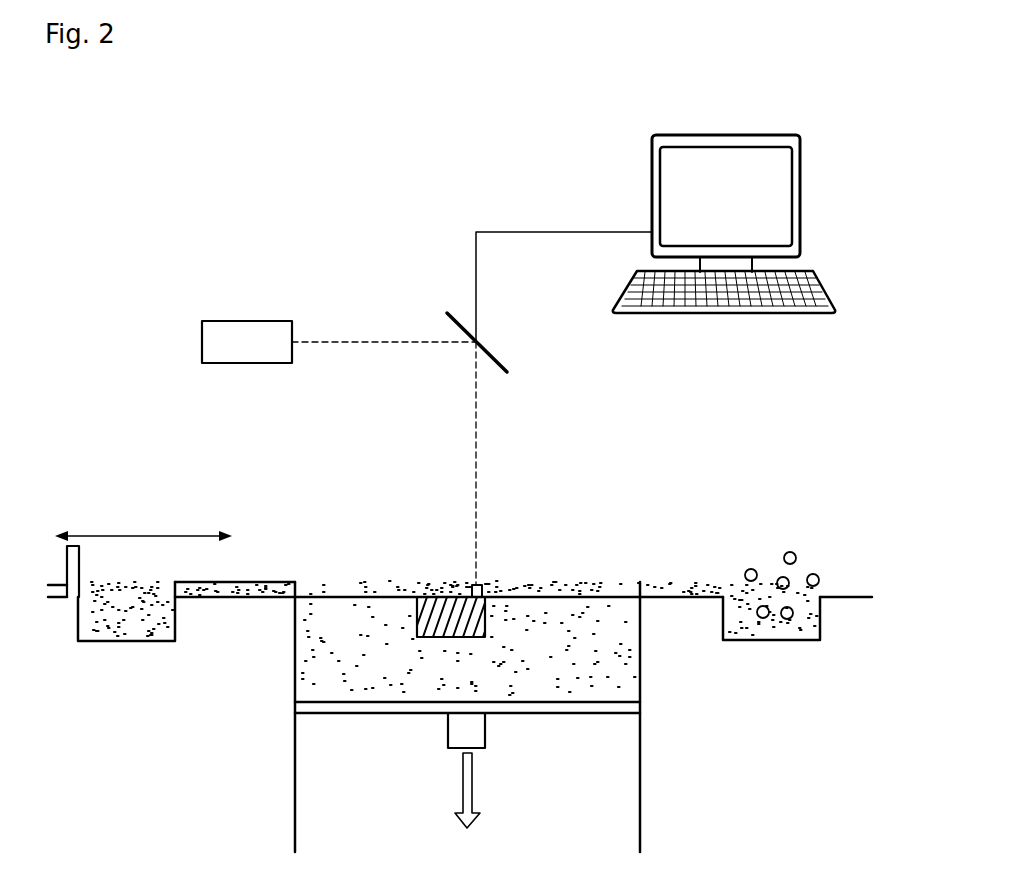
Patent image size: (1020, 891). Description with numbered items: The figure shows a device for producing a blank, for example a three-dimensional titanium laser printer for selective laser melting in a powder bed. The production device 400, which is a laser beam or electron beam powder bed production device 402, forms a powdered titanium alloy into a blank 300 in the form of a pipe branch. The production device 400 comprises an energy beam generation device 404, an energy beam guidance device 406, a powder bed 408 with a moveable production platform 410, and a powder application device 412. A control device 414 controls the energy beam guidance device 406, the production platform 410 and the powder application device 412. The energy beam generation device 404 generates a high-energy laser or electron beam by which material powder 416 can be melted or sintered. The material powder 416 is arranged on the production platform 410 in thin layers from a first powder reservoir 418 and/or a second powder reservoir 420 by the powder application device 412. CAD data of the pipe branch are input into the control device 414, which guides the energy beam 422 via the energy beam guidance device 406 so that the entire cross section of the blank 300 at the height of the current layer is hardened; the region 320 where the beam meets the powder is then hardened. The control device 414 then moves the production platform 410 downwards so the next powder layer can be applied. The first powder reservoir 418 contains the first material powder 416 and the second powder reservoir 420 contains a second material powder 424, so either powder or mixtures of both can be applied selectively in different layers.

The production device 400 is at (345, 255).
The laser beam or electron beam powder bed production device 402 is at (668, 378).
The energy beam generation device 404 is at (248, 320).
The energy beam guidance device 406 is at (491, 351).
The powder bed 408 is at (605, 590).
The production platform 410 is at (375, 714).
The powder application device 412 is at (183, 503).
The control device 414 is at (801, 196).
The material powder 416 is at (361, 572).
The first powder reservoir 418 is at (140, 640).
The second powder reservoir 420 is at (783, 630).
The energy beam 422 is at (478, 420).
The second material powder 424 is at (787, 518).
The blank 300 is at (445, 597).
The melt pool / build region 320 is at (496, 558).